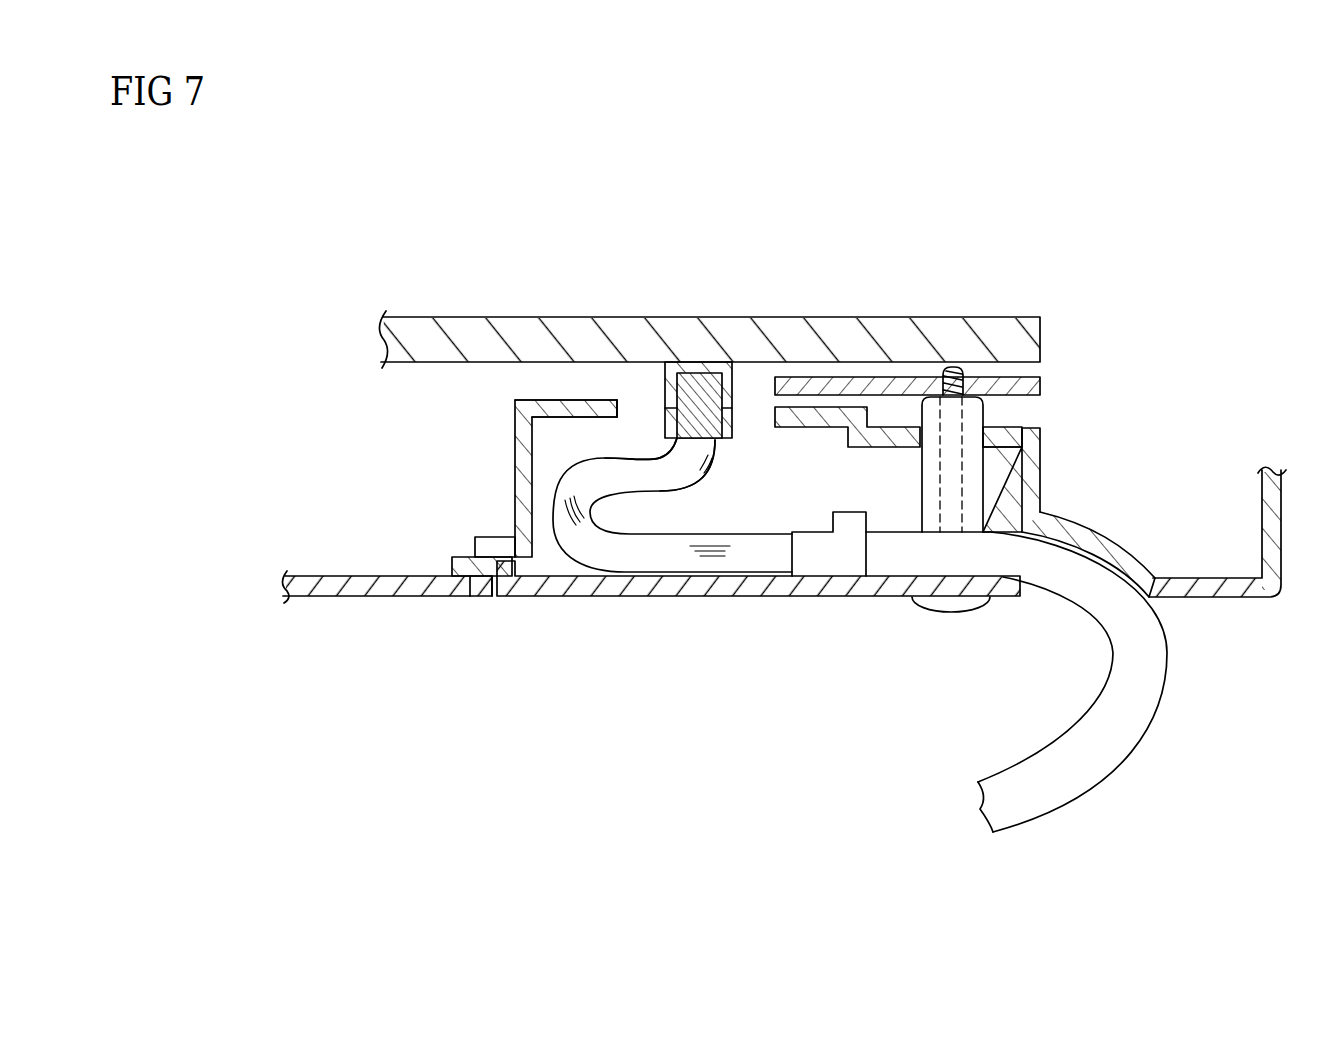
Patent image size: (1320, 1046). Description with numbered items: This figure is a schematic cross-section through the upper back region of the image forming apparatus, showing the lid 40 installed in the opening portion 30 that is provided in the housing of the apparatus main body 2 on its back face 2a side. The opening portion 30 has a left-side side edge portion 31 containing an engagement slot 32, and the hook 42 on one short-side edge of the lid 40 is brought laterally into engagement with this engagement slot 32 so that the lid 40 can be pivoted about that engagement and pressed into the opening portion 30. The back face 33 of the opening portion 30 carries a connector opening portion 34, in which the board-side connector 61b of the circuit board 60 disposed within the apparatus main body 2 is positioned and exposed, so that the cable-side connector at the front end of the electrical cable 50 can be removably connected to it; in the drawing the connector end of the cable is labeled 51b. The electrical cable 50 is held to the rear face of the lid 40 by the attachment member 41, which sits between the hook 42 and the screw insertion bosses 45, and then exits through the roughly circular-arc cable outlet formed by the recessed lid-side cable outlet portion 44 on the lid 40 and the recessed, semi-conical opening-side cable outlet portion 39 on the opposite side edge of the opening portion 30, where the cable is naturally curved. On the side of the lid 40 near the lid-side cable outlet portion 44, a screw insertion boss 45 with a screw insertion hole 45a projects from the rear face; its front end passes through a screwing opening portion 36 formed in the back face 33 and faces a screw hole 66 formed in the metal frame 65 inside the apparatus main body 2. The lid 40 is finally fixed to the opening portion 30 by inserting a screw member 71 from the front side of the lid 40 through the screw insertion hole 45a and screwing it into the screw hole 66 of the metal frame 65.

The apparatus main body 2 is at (1262, 597).
The back face 2a is at (315, 597).
The opening portion 30 is at (532, 457).
The left-side side edge portion 31 is at (500, 576).
The engagement slot 32 is at (470, 563).
The back face of the opening portion 33 is at (587, 437).
The connector opening portion 34 is at (634, 440).
The screwing opening portion 36 is at (980, 435).
The opening-side cable outlet portion 39 is at (1103, 556).
The lid 40 is at (740, 597).
The attachment member 41 is at (850, 562).
The hook 42 is at (452, 560).
The lid-side cable outlet portion 44 is at (1025, 600).
The screw insertion boss 45 is at (978, 500).
The screw insertion hole 45a is at (956, 470).
The electrical cable 50 is at (1117, 752).
The hose connection portion 51b is at (733, 417).
The circuit board 60 is at (1040, 322).
The board-side connector 61b is at (732, 410).
The metal frame 65 is at (1040, 387).
The screw hole 66 is at (960, 365).
The screw member 71 is at (953, 600).